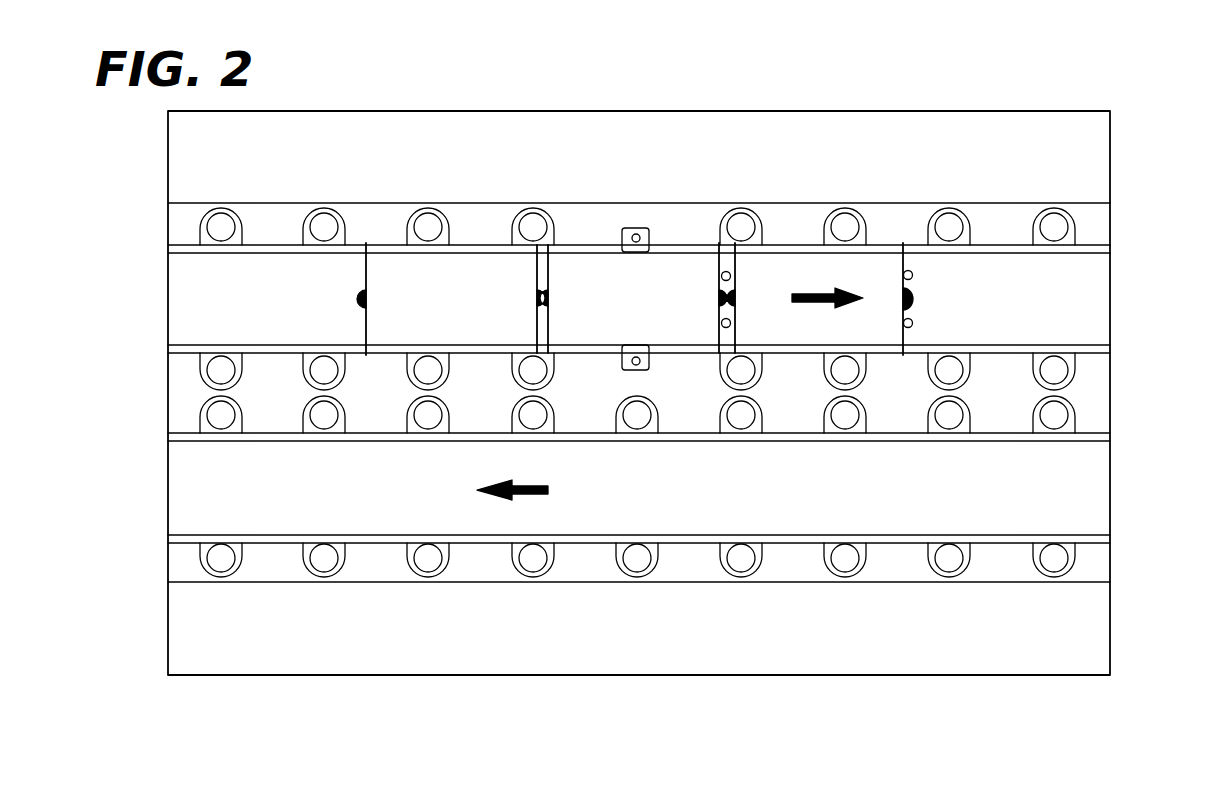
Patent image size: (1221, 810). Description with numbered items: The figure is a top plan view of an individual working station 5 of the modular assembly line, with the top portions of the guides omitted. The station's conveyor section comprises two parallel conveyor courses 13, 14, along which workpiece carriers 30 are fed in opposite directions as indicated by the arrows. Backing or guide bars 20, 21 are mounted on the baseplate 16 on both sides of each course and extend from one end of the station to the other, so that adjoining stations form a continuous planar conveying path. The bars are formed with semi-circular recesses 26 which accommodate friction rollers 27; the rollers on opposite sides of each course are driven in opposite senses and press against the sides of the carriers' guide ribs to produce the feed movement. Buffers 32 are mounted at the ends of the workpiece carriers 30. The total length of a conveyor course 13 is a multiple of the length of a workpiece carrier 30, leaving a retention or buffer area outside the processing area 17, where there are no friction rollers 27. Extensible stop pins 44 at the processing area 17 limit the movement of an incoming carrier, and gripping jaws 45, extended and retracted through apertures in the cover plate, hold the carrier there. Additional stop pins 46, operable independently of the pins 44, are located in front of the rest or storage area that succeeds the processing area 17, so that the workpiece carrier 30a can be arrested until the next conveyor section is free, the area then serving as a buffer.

The working station 5 is at (528, 104).
The conveyor course 13 is at (1122, 263).
The conveyor course 14 is at (1121, 474).
The baseplate 16 is at (289, 633).
The processing area 17 is at (683, 232).
The guide bar 20 is at (1090, 220).
The guide bar 21 is at (1091, 380).
The semi-circular recess 26 is at (343, 218).
The friction roller 27 is at (324, 226).
The workpiece carrier 30 is at (475, 278).
The workpiece carrier in storage area 30a is at (877, 272).
The buffer 32 is at (736, 291).
The extensible stop pin 44 is at (729, 273).
The gripping jaw 45 is at (641, 230).
The additional stop pin 46 is at (912, 272).